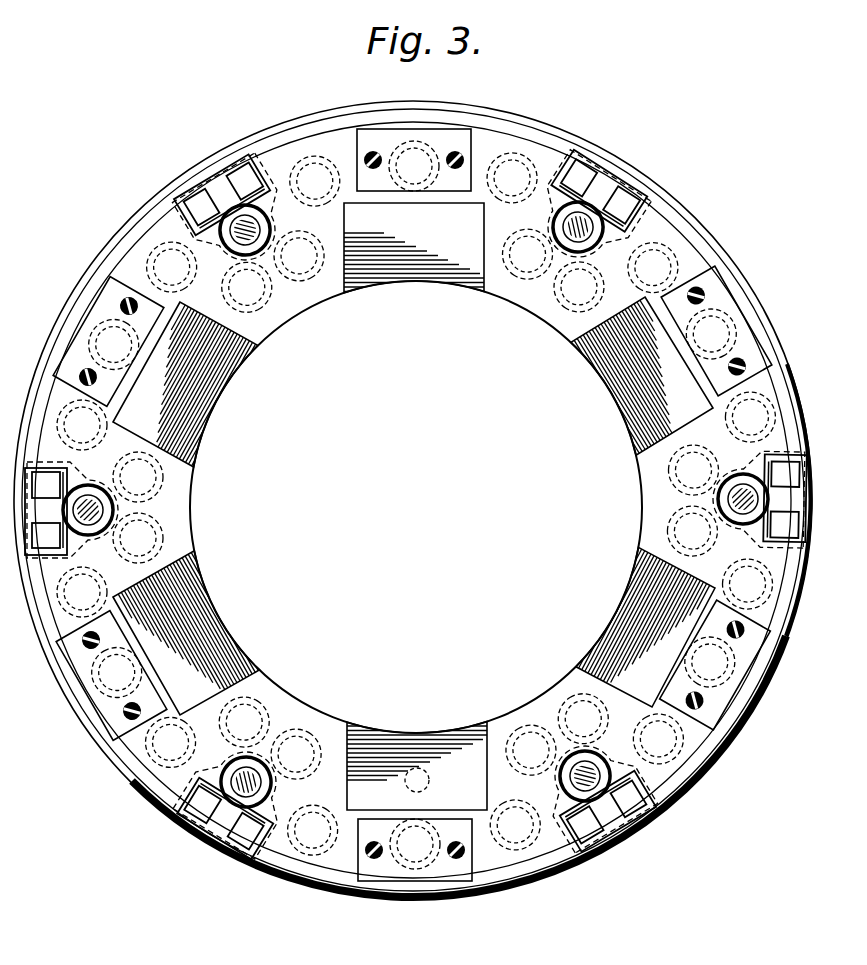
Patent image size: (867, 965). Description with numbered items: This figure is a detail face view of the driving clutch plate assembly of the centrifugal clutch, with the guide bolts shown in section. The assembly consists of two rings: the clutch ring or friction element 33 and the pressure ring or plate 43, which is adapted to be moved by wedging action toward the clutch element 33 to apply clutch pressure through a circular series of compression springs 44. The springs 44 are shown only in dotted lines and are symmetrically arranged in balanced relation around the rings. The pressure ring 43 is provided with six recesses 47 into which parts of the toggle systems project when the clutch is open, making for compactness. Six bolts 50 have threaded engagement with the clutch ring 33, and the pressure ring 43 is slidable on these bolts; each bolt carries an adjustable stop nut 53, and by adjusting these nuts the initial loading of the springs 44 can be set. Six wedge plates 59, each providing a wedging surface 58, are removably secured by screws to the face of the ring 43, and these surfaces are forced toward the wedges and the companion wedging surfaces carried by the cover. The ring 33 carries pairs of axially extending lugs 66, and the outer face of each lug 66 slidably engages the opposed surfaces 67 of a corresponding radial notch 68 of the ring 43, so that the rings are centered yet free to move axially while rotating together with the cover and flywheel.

The clutch ring 33 is at (712, 253).
The pressure ring 43 is at (658, 225).
The compression springs 44 is at (160, 525).
The recesses 47 is at (388, 272).
The bolts 50 is at (89, 518).
The adjustable stop nut 53 is at (68, 487).
The wedging surfaces 58 is at (430, 137).
The wedge plates 59 is at (96, 315).
The lugs 66 is at (49, 490).
The surfaces of the radial notch 67 is at (259, 176).
The radial notch 68 is at (215, 200).